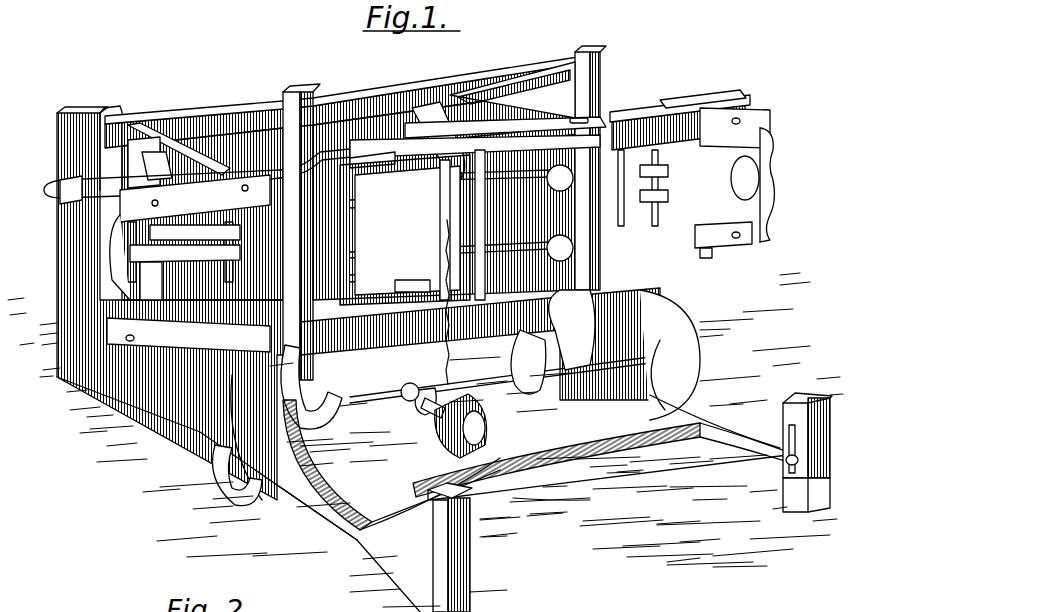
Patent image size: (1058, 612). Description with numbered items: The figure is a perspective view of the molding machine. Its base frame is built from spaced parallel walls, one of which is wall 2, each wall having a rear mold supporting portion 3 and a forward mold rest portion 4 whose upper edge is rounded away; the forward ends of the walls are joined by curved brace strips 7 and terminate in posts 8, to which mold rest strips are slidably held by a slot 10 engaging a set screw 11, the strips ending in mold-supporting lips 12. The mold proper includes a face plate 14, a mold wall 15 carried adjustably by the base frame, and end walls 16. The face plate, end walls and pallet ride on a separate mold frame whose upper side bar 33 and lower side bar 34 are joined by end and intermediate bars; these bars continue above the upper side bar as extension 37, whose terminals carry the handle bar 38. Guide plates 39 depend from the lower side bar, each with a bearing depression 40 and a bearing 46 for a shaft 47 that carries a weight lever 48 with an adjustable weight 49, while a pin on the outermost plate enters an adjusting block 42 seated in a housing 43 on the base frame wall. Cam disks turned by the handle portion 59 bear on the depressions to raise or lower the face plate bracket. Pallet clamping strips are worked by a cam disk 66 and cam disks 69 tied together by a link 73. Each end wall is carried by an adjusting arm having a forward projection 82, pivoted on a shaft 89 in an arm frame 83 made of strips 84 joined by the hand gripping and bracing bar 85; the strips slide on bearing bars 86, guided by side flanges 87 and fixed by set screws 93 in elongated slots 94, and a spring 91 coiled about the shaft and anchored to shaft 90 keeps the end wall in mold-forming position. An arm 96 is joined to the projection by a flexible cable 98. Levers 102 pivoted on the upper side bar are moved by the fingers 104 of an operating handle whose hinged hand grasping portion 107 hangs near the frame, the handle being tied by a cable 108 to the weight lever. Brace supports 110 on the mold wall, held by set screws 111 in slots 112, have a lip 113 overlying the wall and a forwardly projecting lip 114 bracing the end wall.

The wall 2 is at (690, 405).
The mold supporting portion 3 is at (170, 425).
The mold rest portion 4 is at (350, 556).
The curved brace strips 7 is at (533, 468).
The posts 8 is at (812, 498).
The slot 10 is at (789, 455).
The set screw 11 is at (787, 465).
The mold-supporting lips 12 is at (465, 494).
The face plate 14 is at (155, 280).
The mold wall 15 is at (222, 124).
The end walls 16 is at (172, 130).
The side bar 33 is at (475, 151).
The side bar 34 is at (404, 400).
The extension 37 is at (288, 110).
The handle bar 38 is at (362, 92).
The guide plates 39 is at (533, 375).
The bearing depression 40 is at (553, 310).
The adjusting block 42 is at (200, 415).
The housing 43 is at (225, 445).
The bearing 46 is at (380, 230).
The shaft 47 is at (392, 392).
The weight lever 48 is at (432, 412).
The weight 49 is at (486, 428).
The handle portion 59 is at (395, 345).
The cam disk 66 is at (552, 244).
The cam disks 69 is at (395, 287).
The link 73 is at (410, 238).
The forward projection 82 is at (734, 178).
The arm frame 83 is at (704, 110).
The strips 84 is at (615, 115).
The hand gripping and bracing bar 85 is at (774, 176).
The bearing bars 86 is at (645, 120).
The side flanges 87 is at (750, 116).
The shaft 89 is at (188, 335).
The shaft 90 is at (200, 248).
The spring 91 is at (232, 222).
The set screws 93 is at (674, 118).
The elongated slots 94 is at (292, 178).
The arm 96 is at (708, 258).
The flexible cable 98 is at (755, 245).
The levers 102 is at (348, 96).
The fingers 104 is at (445, 118).
The hand grasping portion 107 is at (470, 272).
The cable 108 is at (445, 350).
The brace supports 110 is at (133, 140).
The set screws 111 is at (105, 130).
The slots 112 is at (108, 185).
The lip 113 is at (90, 123).
The forwardly projecting lip 114 is at (150, 160).